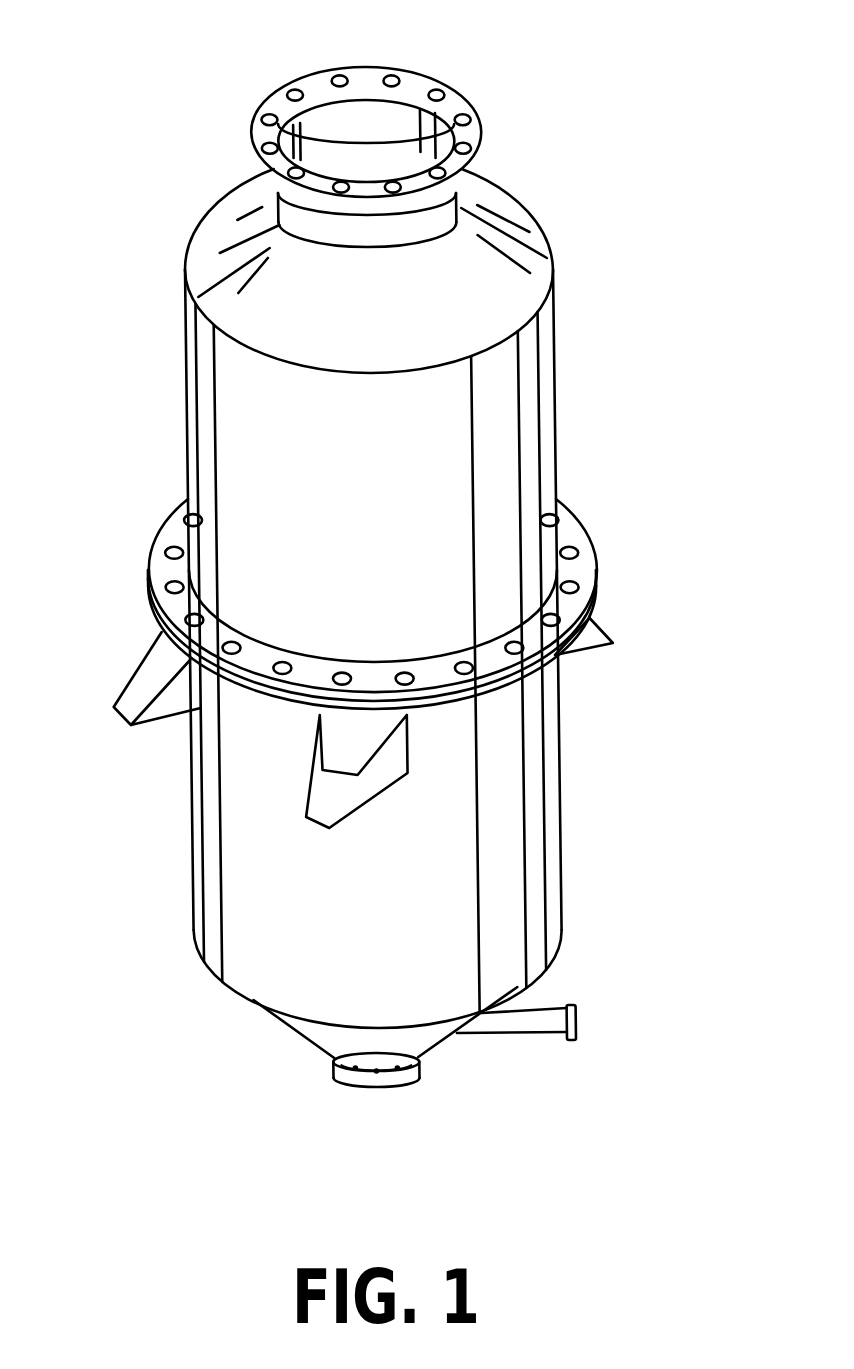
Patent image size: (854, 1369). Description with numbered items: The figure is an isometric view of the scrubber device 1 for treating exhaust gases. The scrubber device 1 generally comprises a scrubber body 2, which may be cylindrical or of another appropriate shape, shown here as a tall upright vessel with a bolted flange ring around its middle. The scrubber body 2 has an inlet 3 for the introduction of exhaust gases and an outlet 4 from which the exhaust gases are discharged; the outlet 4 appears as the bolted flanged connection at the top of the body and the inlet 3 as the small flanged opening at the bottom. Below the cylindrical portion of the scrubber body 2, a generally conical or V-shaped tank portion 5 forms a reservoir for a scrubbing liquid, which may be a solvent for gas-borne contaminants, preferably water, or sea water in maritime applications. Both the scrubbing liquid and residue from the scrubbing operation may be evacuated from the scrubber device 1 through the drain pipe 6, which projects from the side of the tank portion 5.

The scrubber device 1 is at (616, 367).
The scrubber body 2 is at (380, 511).
The inlet 3 is at (354, 1083).
The outlet 4 is at (415, 72).
The tank portion 5 is at (313, 1035).
The drain pipe 6 is at (520, 1035).